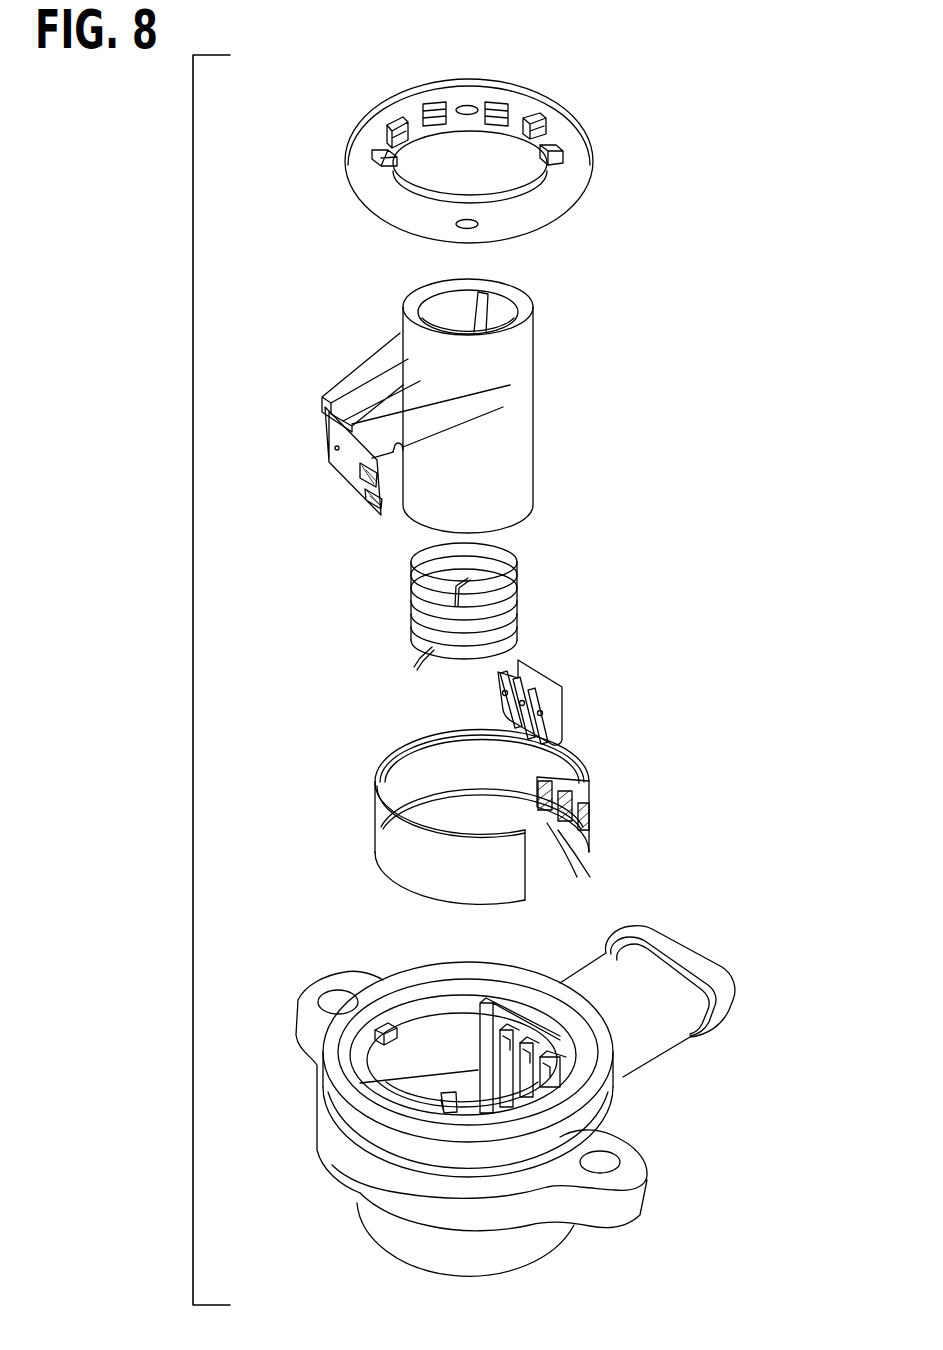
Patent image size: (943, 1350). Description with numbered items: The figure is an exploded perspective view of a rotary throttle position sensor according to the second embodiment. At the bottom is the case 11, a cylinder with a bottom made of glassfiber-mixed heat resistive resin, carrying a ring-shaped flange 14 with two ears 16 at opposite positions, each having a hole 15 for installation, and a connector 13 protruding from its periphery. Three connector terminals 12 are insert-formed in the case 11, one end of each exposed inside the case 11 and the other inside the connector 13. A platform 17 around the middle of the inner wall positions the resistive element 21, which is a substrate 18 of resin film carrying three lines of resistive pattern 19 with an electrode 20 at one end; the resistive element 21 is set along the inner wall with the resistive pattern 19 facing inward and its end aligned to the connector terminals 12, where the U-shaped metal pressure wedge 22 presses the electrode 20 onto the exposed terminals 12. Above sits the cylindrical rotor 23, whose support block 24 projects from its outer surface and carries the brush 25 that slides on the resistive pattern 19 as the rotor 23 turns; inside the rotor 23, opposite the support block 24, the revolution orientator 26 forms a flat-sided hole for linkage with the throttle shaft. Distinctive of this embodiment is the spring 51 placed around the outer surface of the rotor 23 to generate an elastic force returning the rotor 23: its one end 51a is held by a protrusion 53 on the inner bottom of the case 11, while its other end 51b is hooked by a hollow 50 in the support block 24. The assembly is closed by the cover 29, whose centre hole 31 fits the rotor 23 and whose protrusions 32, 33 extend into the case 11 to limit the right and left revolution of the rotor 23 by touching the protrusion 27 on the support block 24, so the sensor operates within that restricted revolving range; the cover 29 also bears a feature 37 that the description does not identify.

The case 11 is at (382, 1225).
The connector terminal 12 is at (541, 1057).
The connector 13 is at (655, 1037).
The flange 14 is at (357, 1168).
The hole 15 is at (337, 1003).
The ear 16 is at (318, 1000).
The platform 17 is at (360, 1083).
The substrate of resistive element 18 is at (520, 777).
The resistive pattern 19 is at (422, 813).
The electrode 20 is at (577, 867).
The resistive element 21 is at (410, 848).
The pressure wedge 22 is at (540, 683).
The rotor 23 is at (533, 402).
The support block 24 is at (428, 417).
The brush 25 is at (356, 462).
The revolution orientator 26 is at (485, 322).
The protrusion 27 is at (378, 386).
The cover 29 is at (560, 212).
The centre hole 31 is at (438, 180).
The protrusion 32 is at (563, 160).
The protrusion 33 is at (372, 160).
The cover projections 37 is at (540, 125).
The hollow 50 is at (399, 452).
The spring 51 is at (520, 608).
The one end of spring 51a is at (418, 660).
The other end of spring 51b is at (475, 580).
The protrusion 53 is at (446, 1092).